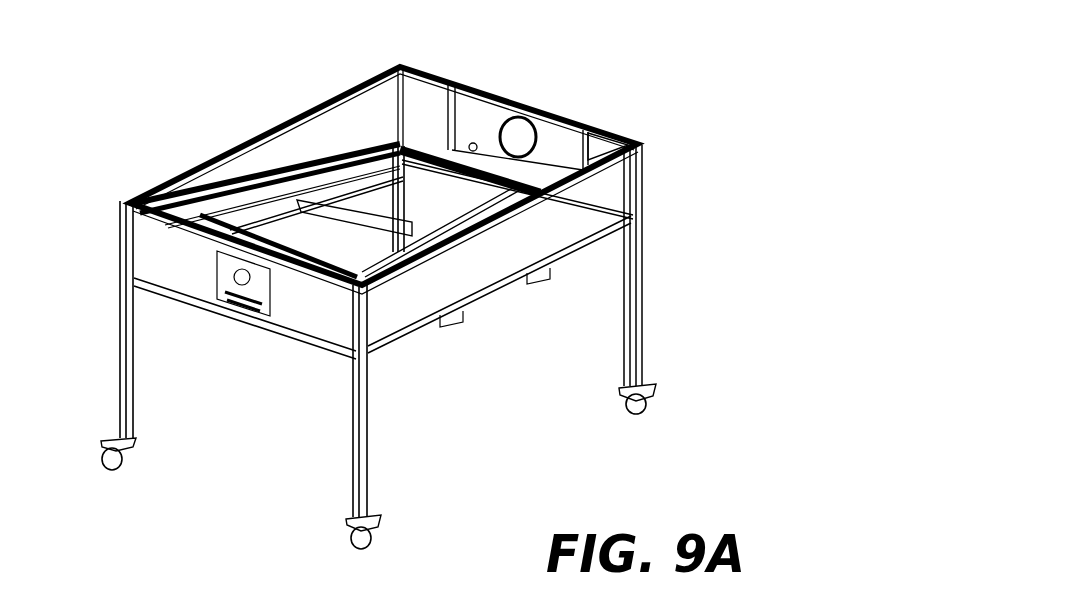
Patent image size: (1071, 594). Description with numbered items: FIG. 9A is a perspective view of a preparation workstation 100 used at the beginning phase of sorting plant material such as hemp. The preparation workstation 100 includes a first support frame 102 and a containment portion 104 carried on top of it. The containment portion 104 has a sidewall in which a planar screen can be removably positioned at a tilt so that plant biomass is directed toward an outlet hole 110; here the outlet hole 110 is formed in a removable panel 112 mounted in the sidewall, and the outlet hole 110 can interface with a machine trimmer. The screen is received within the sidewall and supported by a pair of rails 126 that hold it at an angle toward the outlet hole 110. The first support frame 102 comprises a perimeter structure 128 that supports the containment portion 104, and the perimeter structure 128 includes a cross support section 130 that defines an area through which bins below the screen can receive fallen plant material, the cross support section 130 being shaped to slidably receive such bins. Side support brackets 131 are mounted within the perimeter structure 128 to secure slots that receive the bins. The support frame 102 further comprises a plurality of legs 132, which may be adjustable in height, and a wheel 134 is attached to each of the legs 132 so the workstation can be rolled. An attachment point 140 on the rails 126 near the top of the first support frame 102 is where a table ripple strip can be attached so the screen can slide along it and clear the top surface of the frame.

The preparation workstation 100 is at (182, 54).
The first support frame 102 is at (136, 240).
The containment portion 104 is at (646, 183).
The outlet hole 110 is at (518, 132).
The removable panel 112 is at (470, 117).
The rails 126 is at (263, 198).
The perimeter structure 128 is at (295, 155).
The cross support section 130 is at (415, 223).
The side support bracket 131 is at (515, 167).
The legs 132 is at (639, 318).
The wheels 134 is at (652, 393).
The attachment point 140 is at (387, 143).